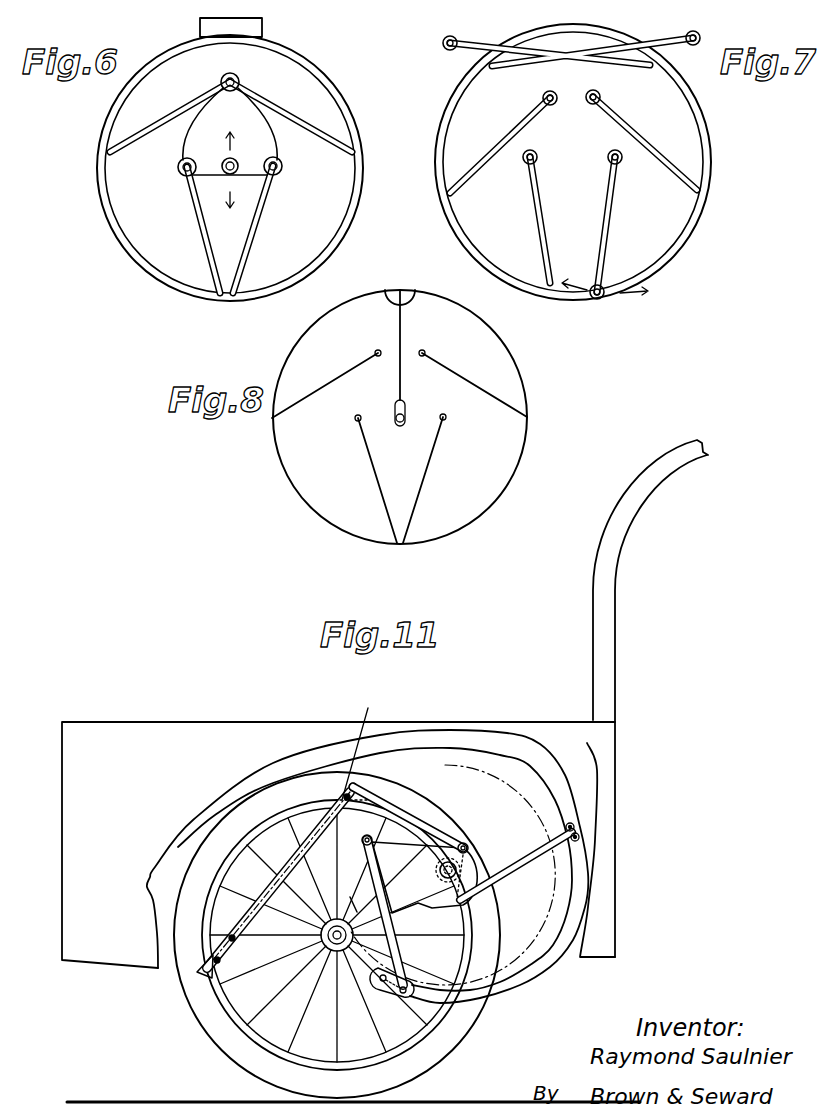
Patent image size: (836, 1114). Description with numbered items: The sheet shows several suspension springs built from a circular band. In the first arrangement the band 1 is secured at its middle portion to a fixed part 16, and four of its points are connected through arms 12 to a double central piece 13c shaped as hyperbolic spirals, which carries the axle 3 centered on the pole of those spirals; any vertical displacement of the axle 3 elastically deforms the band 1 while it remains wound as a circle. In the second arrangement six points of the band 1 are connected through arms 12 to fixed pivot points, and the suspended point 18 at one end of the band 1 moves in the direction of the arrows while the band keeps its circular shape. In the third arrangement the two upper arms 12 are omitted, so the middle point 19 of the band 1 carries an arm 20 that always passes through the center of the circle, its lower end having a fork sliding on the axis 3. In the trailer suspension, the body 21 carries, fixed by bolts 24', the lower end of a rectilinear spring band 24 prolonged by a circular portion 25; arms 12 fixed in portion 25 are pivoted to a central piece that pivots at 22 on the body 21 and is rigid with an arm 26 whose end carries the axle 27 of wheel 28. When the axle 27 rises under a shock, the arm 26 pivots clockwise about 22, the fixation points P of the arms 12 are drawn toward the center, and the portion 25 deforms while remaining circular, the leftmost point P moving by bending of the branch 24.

In FIG. 6, the band 1 is at (348, 115).
In FIG. 7, the band 1 is at (703, 132).
In FIG. 8, the band 1 is at (527, 390).
In FIG. 6, the axle 3 is at (236, 164).
In FIG. 8, the axle 3 is at (405, 407).
In FIG. 6, the arms 12 is at (152, 133).
In FIG. 7, the arms 12 is at (520, 67).
In FIG. 11, the arms 12 is at (410, 947).
In FIG. 6, the double central piece 13c is at (247, 117).
In FIG. 6, the fixed part 16 is at (265, 32).
In FIG. 7, the suspended point 18 is at (595, 297).
In FIG. 8, the middle point 19 is at (400, 288).
In FIG. 8, the arm 20 is at (405, 336).
In FIG. 11, the body 21 is at (530, 727).
In FIG. 11, the pivot 22 is at (460, 862).
In FIG. 11, the rectilinear spring band 24 is at (291, 838).
In FIG. 11, the bolts 24' is at (229, 959).
In FIG. 11, the circular portion 25 is at (550, 788).
In FIG. 11, the arm 26 is at (354, 891).
In FIG. 11, the axle 27 is at (330, 936).
In FIG. 11, the wheel 28 is at (205, 1023).
In FIG. 11, the points of fixation P is at (627, 826).